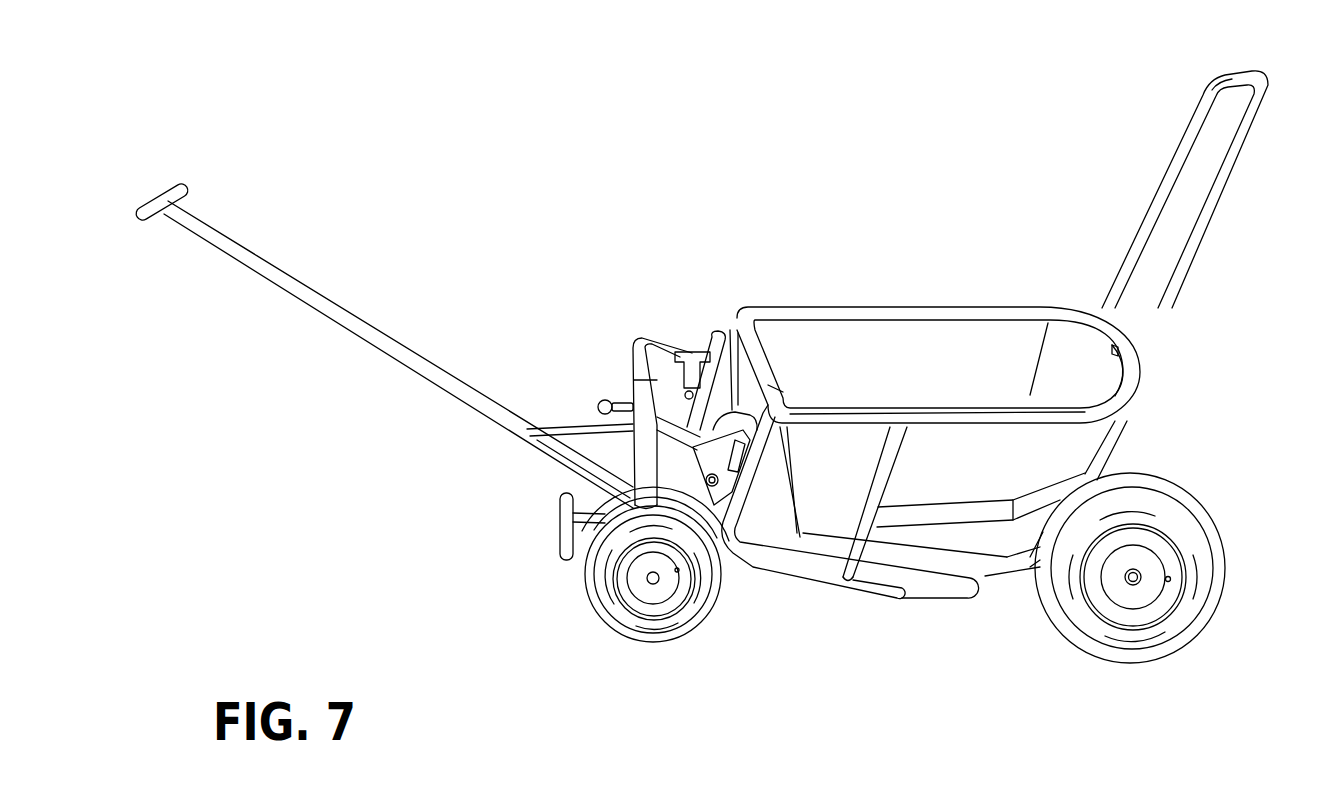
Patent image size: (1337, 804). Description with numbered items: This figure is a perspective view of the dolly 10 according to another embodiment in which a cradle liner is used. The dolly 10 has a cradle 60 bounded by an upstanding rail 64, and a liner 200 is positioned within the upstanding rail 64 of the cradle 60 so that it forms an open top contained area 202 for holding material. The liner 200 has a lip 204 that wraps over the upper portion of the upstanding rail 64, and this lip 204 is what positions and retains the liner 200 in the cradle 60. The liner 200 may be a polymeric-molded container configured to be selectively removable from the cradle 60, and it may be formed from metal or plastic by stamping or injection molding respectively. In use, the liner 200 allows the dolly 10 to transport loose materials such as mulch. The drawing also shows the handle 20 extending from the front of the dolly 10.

The dolly 10 is at (518, 250).
The tow handle 20 is at (401, 413).
The cradle 60 is at (1229, 392).
The upstanding rail 64 is at (855, 430).
The liner 200 is at (970, 311).
The open top contained area 202 is at (876, 366).
The lip 204 is at (795, 318).